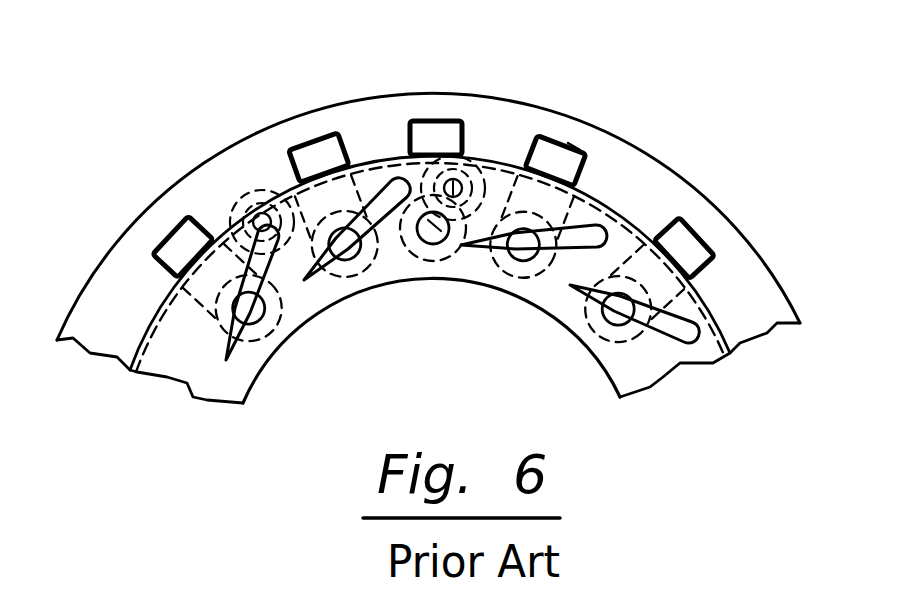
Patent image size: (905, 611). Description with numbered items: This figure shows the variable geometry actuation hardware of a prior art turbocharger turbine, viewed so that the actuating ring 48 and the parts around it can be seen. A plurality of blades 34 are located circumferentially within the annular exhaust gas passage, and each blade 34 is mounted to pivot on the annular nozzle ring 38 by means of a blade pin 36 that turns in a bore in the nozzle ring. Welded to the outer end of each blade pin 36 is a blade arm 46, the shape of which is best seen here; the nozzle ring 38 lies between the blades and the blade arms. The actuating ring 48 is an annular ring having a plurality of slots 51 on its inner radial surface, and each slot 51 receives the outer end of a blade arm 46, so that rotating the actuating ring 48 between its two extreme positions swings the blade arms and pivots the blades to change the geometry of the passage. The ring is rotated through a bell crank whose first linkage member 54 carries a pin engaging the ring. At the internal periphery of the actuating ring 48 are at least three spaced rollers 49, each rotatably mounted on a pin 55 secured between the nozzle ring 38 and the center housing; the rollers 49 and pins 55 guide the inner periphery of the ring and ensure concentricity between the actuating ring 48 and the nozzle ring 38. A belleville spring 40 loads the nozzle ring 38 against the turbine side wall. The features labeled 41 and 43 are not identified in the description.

The blade 34 is at (237, 347).
The blade pin 36 is at (262, 313).
The nozzle ring 38 is at (190, 386).
The belleville spring 40 is at (177, 243).
The plate edge 41 is at (472, 167).
The hidden edge 43 is at (503, 170).
The blade arm 46 is at (572, 163).
The actuating ring 48 is at (702, 193).
The roller 49 is at (240, 200).
The slot 51 is at (595, 126).
The first linkage member 54 is at (405, 140).
The pin 55 is at (262, 195).